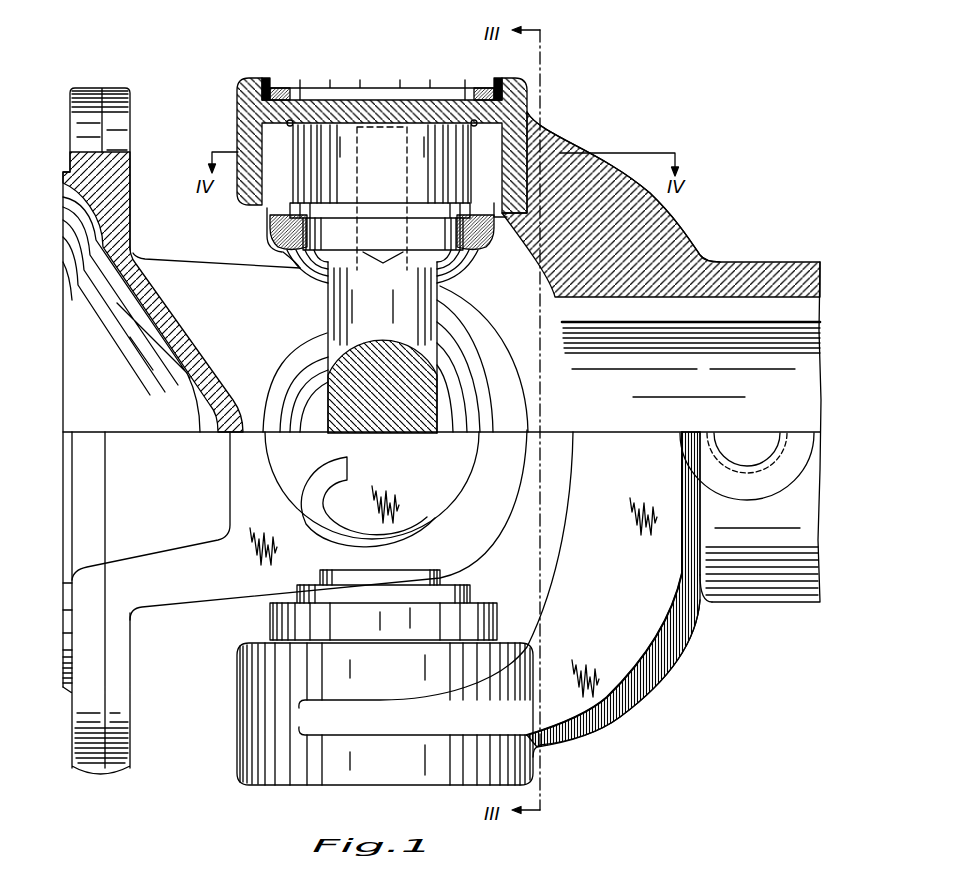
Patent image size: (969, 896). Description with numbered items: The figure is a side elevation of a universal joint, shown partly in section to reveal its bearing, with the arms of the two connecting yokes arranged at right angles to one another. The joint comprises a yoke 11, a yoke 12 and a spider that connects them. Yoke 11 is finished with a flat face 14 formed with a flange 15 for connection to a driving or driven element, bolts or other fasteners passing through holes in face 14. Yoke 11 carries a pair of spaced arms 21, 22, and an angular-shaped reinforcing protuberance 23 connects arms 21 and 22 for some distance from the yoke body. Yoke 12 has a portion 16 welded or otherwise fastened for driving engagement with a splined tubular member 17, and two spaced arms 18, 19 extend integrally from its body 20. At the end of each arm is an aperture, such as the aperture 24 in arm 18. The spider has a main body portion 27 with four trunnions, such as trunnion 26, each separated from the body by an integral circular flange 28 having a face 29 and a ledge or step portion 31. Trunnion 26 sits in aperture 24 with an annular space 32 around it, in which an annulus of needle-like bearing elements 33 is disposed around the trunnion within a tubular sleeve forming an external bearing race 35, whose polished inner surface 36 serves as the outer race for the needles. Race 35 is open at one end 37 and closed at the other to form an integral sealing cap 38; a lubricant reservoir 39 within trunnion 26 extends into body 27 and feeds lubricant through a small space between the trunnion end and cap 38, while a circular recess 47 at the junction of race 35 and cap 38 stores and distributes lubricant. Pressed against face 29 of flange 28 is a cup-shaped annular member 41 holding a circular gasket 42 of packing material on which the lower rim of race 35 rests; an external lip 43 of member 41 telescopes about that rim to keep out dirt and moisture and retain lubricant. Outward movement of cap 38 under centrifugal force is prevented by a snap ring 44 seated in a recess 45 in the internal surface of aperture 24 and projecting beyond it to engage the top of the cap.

The yoke 11 is at (128, 88).
The yoke 12 is at (633, 228).
The flat face 14 is at (73, 763).
The flange 15 is at (420, 315).
The portion 16 is at (683, 622).
The splined tubular member 17 is at (767, 592).
The arm 18 is at (547, 133).
The arm 19 is at (565, 708).
The body 20 is at (672, 407).
The arm 21 is at (212, 273).
The arm 22 is at (198, 593).
The protuberance 23 is at (142, 290).
The aperture 24 is at (265, 80).
The trunnion 26 is at (425, 140).
The main body portion 27 is at (355, 330).
The circular flange 28 is at (470, 257).
The face 29 is at (485, 233).
The ledge or step portion 31 is at (290, 209).
The annular space 32 is at (298, 128).
The bearing elements 33 is at (303, 168).
The external bearing race 35 is at (280, 133).
The inner surface 36 is at (467, 170).
The open end 37 is at (330, 263).
The sealing cap 38 is at (292, 112).
The lubricant reservoir 39 is at (400, 142).
The annular member 41 is at (288, 242).
The circular gasket 42 is at (272, 236).
The external lip 43 is at (268, 218).
The snap ring 44 is at (428, 93).
The recess 45 is at (488, 90).
The circular recess 47 is at (270, 110).